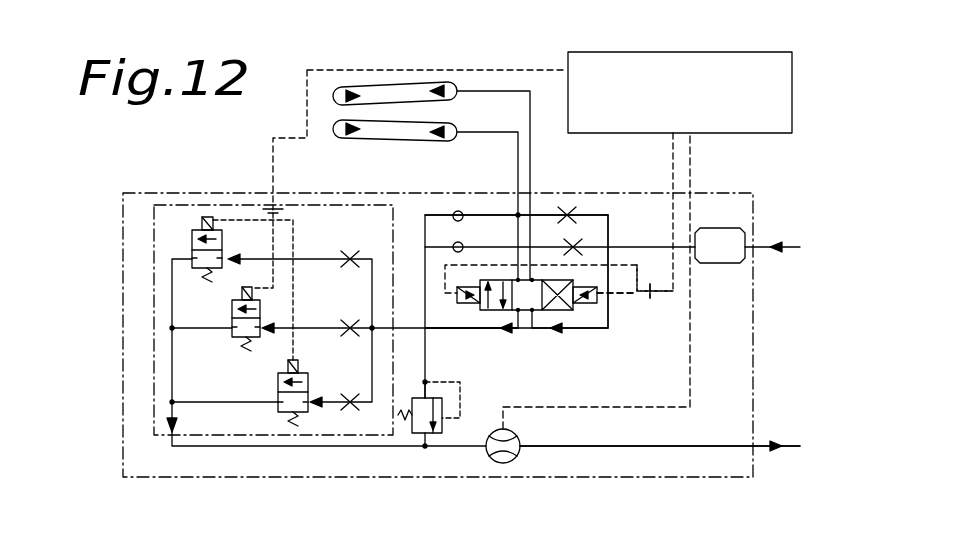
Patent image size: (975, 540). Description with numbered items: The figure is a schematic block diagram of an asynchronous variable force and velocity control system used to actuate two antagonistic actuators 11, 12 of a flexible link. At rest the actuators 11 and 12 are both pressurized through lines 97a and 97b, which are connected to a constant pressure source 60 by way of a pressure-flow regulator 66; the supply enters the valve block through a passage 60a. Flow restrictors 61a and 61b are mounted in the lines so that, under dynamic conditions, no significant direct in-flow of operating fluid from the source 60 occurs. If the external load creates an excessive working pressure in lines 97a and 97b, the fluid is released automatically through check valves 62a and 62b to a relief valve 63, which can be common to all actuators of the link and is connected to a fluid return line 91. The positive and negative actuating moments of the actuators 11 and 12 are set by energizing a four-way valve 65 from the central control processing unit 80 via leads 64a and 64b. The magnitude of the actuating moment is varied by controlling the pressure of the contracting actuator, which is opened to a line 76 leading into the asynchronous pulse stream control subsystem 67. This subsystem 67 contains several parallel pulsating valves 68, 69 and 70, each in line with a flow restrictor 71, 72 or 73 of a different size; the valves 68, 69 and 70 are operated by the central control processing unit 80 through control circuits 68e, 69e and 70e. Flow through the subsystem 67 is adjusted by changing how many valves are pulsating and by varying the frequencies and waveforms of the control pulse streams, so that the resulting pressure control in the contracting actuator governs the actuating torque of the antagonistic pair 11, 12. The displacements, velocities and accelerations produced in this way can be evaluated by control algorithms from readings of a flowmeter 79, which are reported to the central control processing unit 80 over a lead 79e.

The actuator 11 is at (390, 87).
The actuator 12 is at (337, 124).
The line 97a is at (468, 88).
The line 97b is at (503, 130).
The central control processing unit 80 is at (760, 133).
The constant pressure source 60 is at (787, 243).
The supply passage 60a is at (611, 247).
The pressure-flow regulator 66 is at (725, 263).
The lead 79e is at (690, 385).
The fluid return line 91 is at (790, 446).
The flowmeter 79 is at (503, 463).
The relief valve 63 is at (420, 435).
The asynchronous pulse stream control subsystem 67 is at (154, 355).
The valve 68 is at (192, 243).
The valve 69 is at (232, 315).
The valve 70 is at (285, 412).
The control circuit 68e is at (227, 220).
The control circuit 69e is at (273, 250).
The control circuit 70e is at (293, 248).
The flow restrictor 71 is at (352, 255).
The flow restrictor 72 is at (350, 332).
The flow restrictor 73 is at (362, 404).
The check valve 62a is at (457, 243).
The check valve 62b is at (462, 210).
The flow restrictor 61a is at (574, 245).
The flow restrictor 61b is at (567, 213).
The 4-way valve 65 is at (528, 311).
The line 76 is at (497, 330).
The lead 64a is at (620, 267).
The lead 64b is at (620, 295).